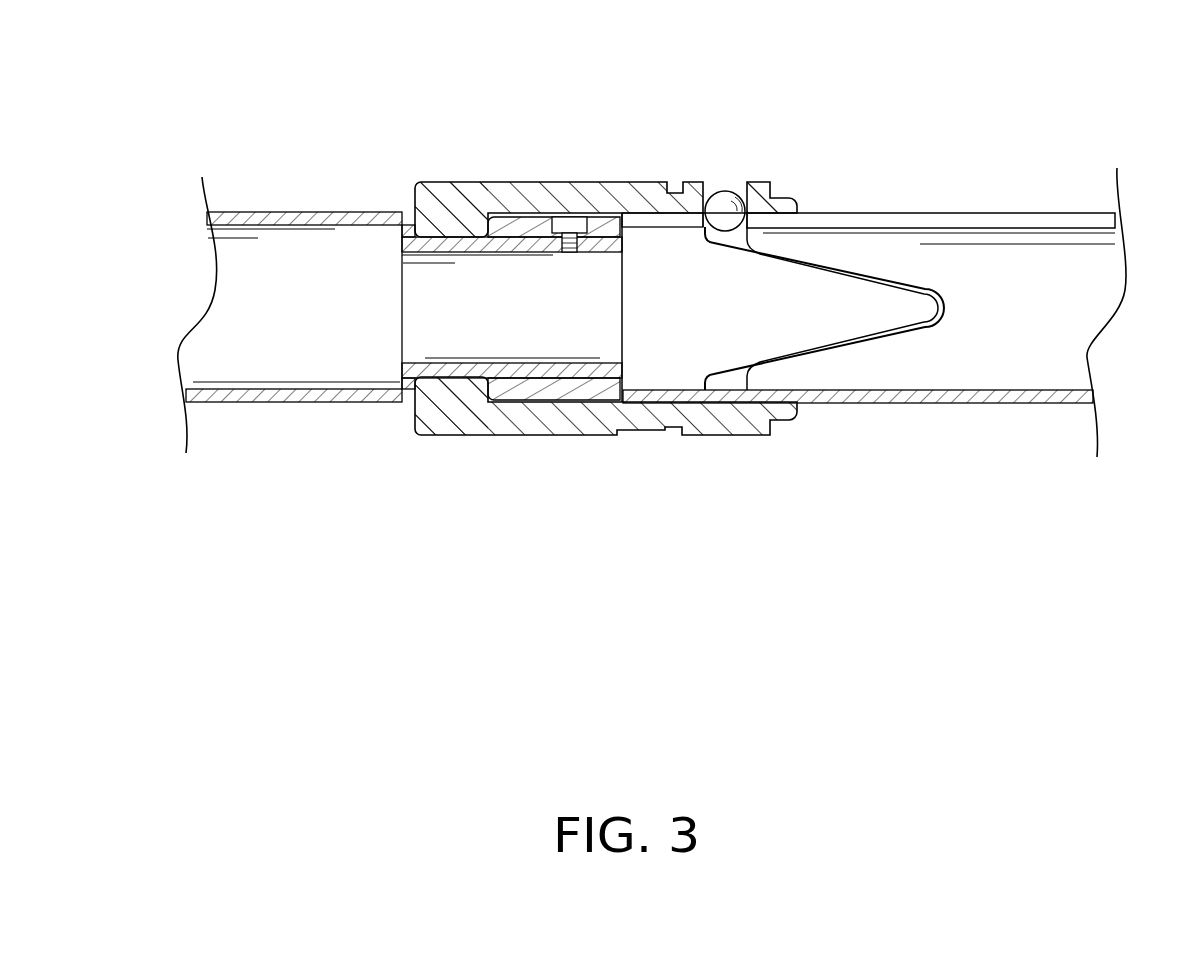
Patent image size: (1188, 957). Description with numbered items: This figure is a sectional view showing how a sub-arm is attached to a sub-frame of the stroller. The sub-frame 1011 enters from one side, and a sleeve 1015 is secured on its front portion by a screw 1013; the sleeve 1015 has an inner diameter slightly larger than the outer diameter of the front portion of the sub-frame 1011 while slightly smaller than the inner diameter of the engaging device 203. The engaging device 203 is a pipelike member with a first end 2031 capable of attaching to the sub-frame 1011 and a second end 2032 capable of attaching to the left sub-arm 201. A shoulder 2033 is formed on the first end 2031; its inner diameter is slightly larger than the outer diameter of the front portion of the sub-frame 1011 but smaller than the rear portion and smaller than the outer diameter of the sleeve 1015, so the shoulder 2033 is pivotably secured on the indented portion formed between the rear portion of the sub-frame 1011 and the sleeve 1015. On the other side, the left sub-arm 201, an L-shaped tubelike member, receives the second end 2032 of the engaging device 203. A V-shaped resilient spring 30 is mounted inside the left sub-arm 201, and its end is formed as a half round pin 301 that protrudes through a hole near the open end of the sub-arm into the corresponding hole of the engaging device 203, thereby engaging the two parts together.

The sub-frame 1011 is at (292, 275).
The screw 1013 is at (595, 225).
The sleeve 1015 is at (550, 380).
The engaging device 203 is at (608, 270).
The first end 2031 is at (470, 182).
The second end 2032 is at (757, 183).
The shoulder 2033 is at (440, 387).
The half round pin 301 is at (722, 200).
The resilient spring 30 is at (887, 343).
The left sub-arm 201 is at (1020, 272).